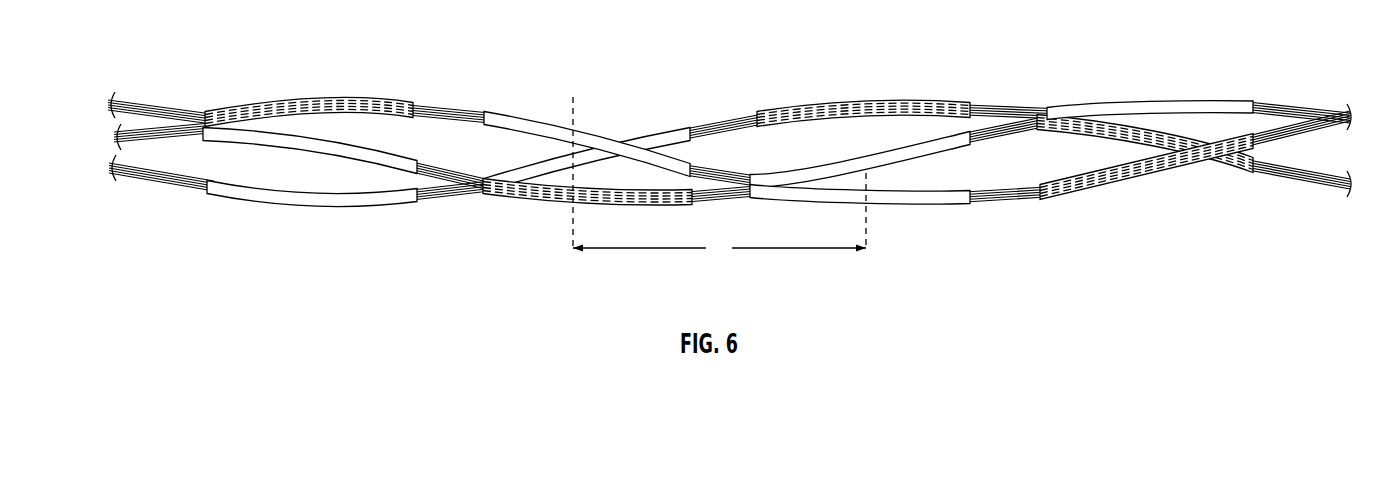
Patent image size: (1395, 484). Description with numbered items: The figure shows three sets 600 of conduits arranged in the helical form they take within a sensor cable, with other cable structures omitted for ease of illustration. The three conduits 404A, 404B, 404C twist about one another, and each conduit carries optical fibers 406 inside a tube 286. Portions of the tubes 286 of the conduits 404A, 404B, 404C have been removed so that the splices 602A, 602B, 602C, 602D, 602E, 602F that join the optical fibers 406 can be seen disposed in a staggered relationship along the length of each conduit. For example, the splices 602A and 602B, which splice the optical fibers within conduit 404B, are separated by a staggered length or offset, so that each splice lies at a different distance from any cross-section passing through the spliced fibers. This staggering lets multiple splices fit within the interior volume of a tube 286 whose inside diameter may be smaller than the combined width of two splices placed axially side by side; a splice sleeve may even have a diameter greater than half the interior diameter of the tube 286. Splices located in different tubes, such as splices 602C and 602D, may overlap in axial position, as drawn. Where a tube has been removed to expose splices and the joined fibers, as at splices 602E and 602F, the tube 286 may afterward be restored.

The sets of conduits 600 is at (1274, 36).
The optical fibers 406 is at (449, 100).
The tube 286 is at (227, 108).
The splice 602A is at (287, 103).
The splice 602B is at (917, 210).
The splice 602C is at (287, 203).
The splice 602D is at (280, 147).
The splice 602E is at (917, 152).
The splice 602F is at (1163, 100).
The conduit 404A is at (794, 104).
The conduit 404B is at (360, 91).
The conduit 404C is at (495, 201).